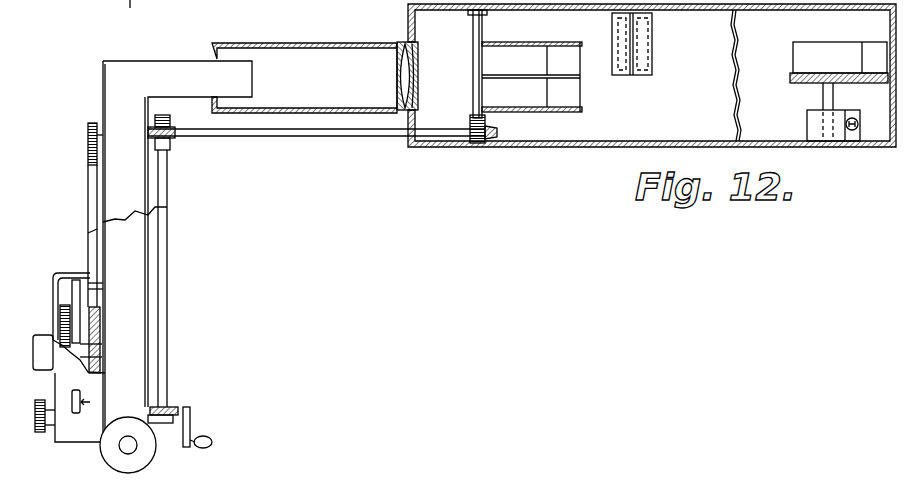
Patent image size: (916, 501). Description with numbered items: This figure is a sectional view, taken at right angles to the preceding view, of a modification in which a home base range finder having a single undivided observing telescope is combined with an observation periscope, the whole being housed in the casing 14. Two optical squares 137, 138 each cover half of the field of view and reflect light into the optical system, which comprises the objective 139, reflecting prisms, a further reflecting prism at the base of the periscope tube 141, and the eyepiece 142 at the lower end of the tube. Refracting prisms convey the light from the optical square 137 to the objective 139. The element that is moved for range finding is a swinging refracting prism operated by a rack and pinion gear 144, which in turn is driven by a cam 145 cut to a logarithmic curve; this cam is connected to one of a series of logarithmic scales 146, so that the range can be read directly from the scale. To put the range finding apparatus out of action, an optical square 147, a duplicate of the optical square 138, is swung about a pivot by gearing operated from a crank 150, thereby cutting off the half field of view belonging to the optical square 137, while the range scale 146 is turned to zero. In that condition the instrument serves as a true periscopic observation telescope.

The camera box 14 is at (456, 37).
The optical square 137 is at (871, 52).
The optical square 138 is at (572, 94).
The objective 139 is at (397, 74).
The periscope tube 141 is at (138, 183).
The eyepiece 142 is at (150, 456).
The rack and pinion gear 144 is at (88, 158).
The cam cut to a logarithmic curve 145 is at (100, 327).
The logarithmic scale 146 is at (72, 297).
The optical square 147 is at (557, 49).
The crank 150 is at (190, 425).